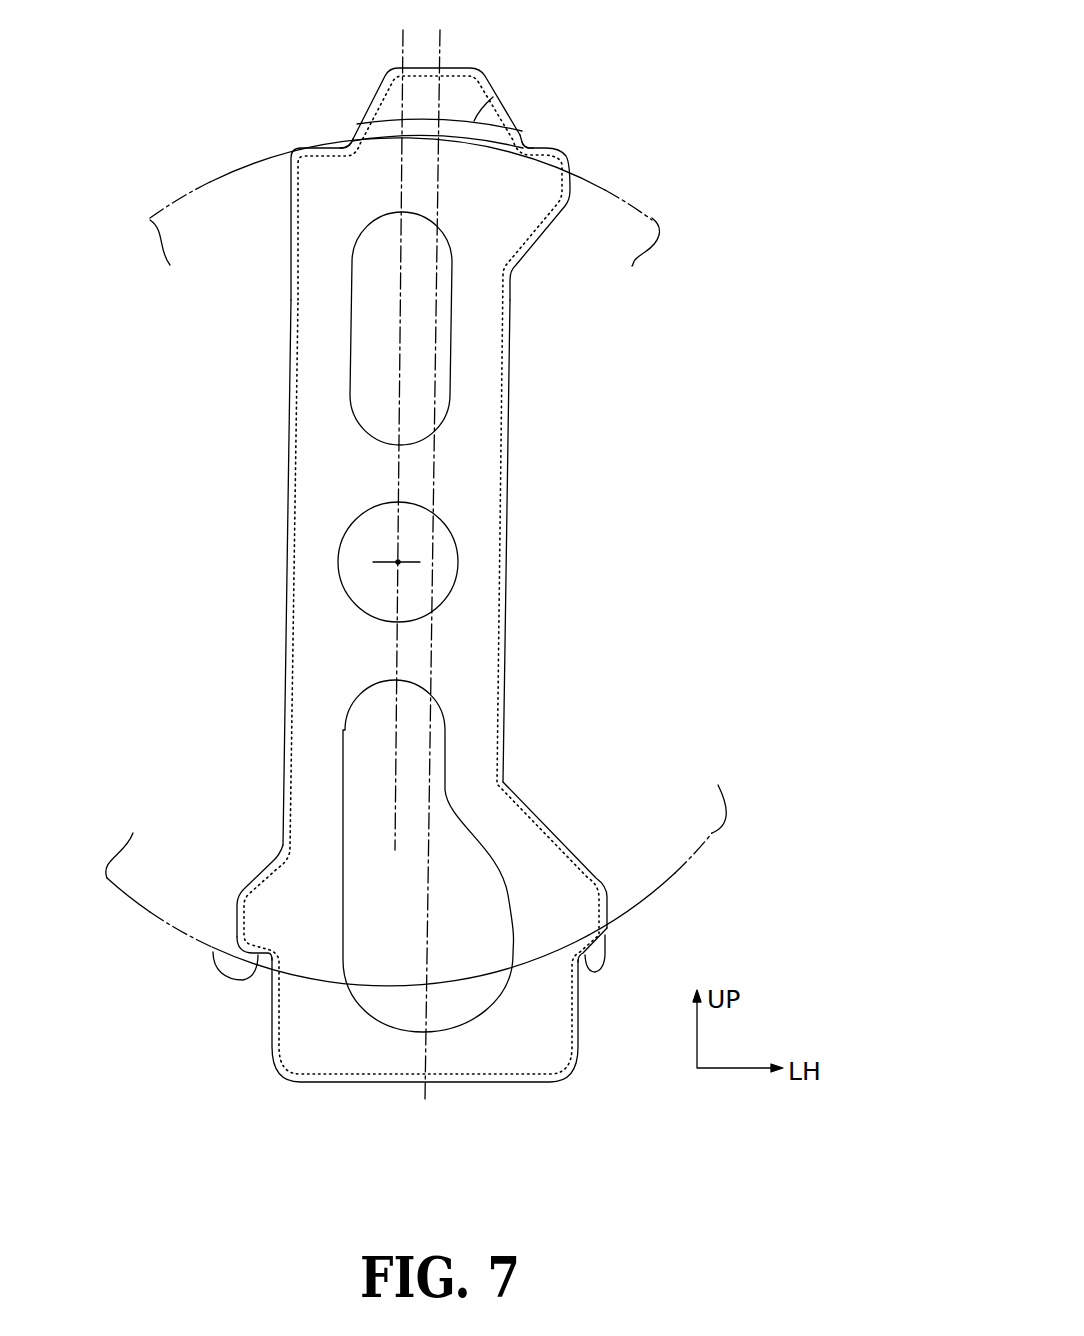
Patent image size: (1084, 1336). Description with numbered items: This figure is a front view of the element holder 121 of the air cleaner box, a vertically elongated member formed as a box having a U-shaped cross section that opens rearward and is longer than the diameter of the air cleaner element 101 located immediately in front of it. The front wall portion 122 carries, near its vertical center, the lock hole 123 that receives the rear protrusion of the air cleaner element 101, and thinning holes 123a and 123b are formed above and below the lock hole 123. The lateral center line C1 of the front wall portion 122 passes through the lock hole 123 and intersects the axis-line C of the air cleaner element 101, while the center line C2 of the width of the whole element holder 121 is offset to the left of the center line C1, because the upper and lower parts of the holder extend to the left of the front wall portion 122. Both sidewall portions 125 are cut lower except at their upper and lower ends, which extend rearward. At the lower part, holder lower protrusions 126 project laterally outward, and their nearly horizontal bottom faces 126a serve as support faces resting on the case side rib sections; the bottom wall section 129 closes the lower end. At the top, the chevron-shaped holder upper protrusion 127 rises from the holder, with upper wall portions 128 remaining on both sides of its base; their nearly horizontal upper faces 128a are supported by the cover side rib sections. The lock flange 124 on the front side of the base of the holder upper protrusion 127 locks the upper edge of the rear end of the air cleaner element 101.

The air cleaner element 101 is at (660, 215).
The element holder 121 is at (582, 96).
The front wall portion 122 is at (480, 432).
The lock hole 123 is at (420, 516).
The thinning hole 123a is at (452, 300).
The thinning hole 123b is at (447, 748).
The lock flange 124 is at (493, 97).
The sidewall portions 125 is at (292, 393).
The holder lower protrusion 126 is at (257, 877).
The bottom face 126a is at (214, 952).
The holder upper protrusion 127 is at (381, 84).
The upper wall portion 128 is at (313, 146).
The upper face 128a is at (331, 146).
The bottom wall section 129 is at (310, 1083).
The axis-line C is at (397, 562).
The center line of the width of the front wall portion C1 is at (400, 51).
The center line of the width of the whole element holder C2 is at (441, 43).